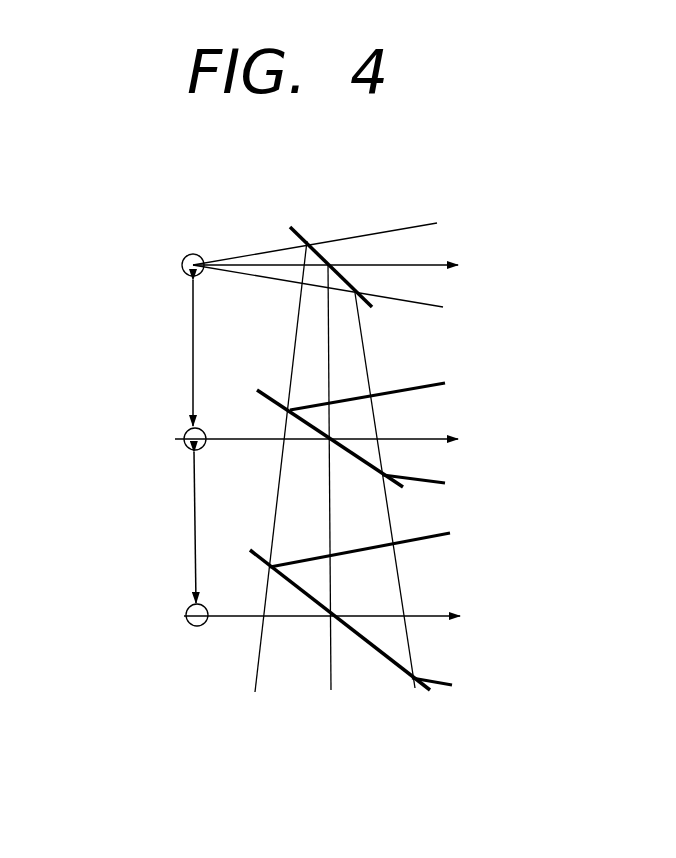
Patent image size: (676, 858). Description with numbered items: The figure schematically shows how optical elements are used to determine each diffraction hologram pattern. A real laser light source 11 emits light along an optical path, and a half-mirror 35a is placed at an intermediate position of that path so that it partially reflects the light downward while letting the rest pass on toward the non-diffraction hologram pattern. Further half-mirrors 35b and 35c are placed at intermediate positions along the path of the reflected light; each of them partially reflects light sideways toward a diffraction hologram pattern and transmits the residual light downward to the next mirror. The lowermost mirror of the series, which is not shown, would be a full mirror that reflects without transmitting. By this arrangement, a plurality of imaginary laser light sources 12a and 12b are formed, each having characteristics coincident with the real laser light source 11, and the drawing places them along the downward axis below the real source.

The real laser light source 11 is at (190, 254).
The imaginary laser light source 12a is at (185, 432).
The imaginary laser light source 12b is at (187, 610).
The half-mirror 35a is at (305, 240).
The half-mirror 35b is at (362, 458).
The half-mirror 35c is at (367, 652).